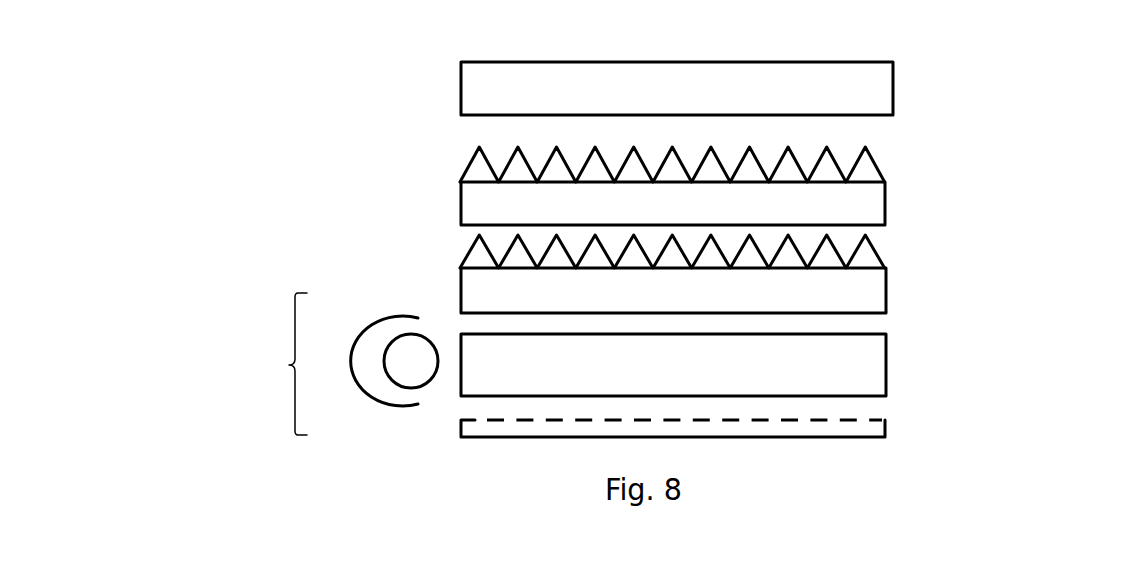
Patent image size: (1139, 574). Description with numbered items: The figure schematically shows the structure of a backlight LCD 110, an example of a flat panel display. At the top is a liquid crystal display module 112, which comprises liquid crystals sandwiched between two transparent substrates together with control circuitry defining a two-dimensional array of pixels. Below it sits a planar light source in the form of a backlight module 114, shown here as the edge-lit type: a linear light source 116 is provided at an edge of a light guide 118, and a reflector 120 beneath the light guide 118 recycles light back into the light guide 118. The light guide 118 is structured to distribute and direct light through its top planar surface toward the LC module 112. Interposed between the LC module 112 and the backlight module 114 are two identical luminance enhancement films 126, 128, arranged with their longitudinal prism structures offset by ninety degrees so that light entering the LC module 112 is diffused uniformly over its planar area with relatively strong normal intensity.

The backlight LCD 110 is at (1003, 112).
The liquid crystal display module 112 is at (885, 79).
The backlight module 114 is at (289, 365).
The linear light source 116 is at (395, 365).
The light guide 118 is at (877, 367).
The reflector 120 is at (885, 425).
The luminance enhancement film 126 is at (867, 177).
The luminance enhancement film 128 is at (867, 268).